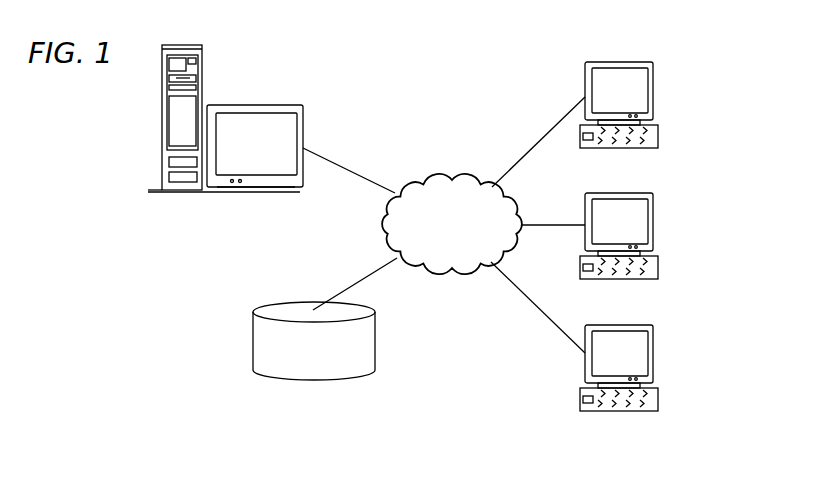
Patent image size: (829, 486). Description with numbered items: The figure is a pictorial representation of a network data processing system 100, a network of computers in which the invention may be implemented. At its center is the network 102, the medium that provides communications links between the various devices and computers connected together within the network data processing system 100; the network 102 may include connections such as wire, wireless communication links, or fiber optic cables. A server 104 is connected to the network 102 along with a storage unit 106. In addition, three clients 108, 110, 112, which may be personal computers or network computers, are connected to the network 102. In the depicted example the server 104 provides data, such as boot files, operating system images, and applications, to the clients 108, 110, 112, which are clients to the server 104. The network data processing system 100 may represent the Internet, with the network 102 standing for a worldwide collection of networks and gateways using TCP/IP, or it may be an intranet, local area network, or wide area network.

The network data processing system 100 is at (497, 73).
The network 102 is at (422, 180).
The server 104 is at (162, 120).
The storage unit 106 is at (300, 380).
The client 108 is at (654, 93).
The client 110 is at (654, 225).
The client 112 is at (654, 357).